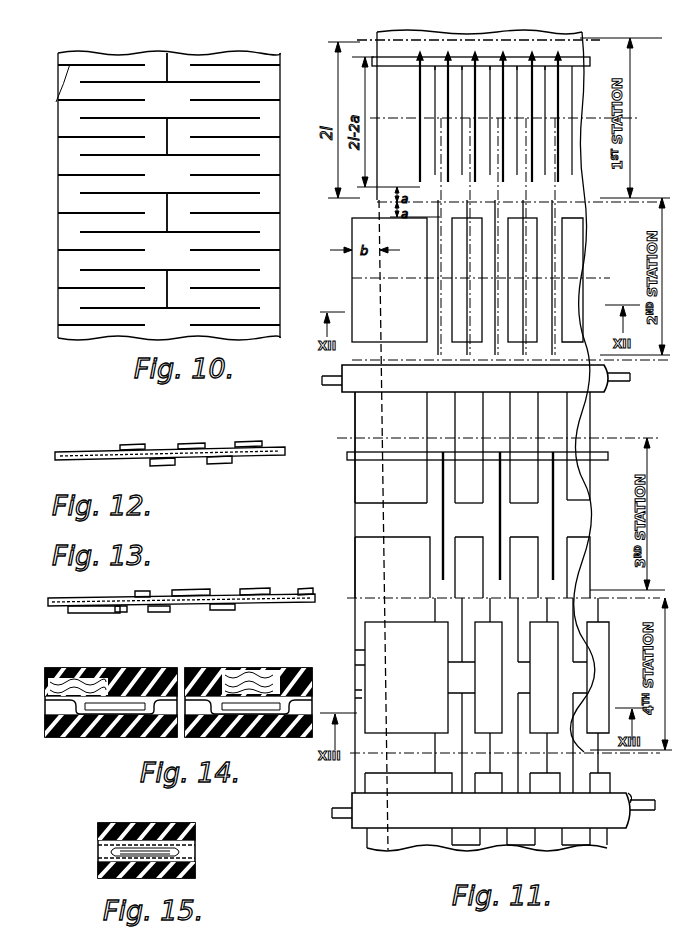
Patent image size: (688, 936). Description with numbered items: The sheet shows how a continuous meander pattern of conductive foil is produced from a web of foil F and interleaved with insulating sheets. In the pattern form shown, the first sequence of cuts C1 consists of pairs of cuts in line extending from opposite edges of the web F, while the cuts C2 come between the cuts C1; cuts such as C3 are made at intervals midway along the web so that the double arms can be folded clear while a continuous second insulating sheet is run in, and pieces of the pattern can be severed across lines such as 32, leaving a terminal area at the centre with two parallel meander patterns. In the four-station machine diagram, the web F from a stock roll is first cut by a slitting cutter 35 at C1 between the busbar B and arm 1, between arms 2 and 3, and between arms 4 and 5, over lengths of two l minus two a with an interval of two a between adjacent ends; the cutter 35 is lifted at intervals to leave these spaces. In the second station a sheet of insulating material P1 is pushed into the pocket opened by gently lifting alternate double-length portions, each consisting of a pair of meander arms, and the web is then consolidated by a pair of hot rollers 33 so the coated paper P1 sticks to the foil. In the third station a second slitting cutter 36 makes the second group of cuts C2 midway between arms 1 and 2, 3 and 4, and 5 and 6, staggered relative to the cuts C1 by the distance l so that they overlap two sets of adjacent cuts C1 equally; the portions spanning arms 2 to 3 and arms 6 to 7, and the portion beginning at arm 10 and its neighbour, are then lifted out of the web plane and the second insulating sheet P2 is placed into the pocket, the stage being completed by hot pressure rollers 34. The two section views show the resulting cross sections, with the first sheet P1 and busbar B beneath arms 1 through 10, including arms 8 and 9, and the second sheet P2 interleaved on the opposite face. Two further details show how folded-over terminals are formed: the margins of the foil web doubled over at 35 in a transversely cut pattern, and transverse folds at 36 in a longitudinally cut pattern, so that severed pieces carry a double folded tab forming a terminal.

In FIG. 10, the foil web F is at (278, 60).
In FIG. 11, the foil web F is at (404, 34).
In FIG. 11, the busbar B is at (380, 43).
In FIG. 12, the busbar B is at (86, 460).
In FIG. 13, the busbar B is at (96, 612).
In FIG. 10, the first sequence of cuts C1 is at (66, 136).
In FIG. 11, the first sequence of cuts C1 is at (471, 163).
In FIG. 12, the first sequence of cuts C1 is at (125, 468).
In FIG. 10, the second group of cuts C2 is at (250, 82).
In FIG. 11, the second group of cuts C2 is at (502, 530).
In FIG. 10, the severing cuts C3 is at (172, 213).
In FIG. 11, the first insulating sheet P1 is at (352, 297).
In FIG. 12, the first insulating sheet P1 is at (72, 452).
In FIG. 13, the first insulating sheet P1 is at (70, 612).
In FIG. 11, the second insulating sheet P2 is at (365, 653).
In FIG. 13, the second insulating sheet P2 is at (70, 598).
In FIG. 10, the severing lines 32 is at (50, 175).
In FIG. 11, the hot rollers 33 is at (600, 391).
In FIG. 11, the hot pressure rollers 34 is at (611, 828).
In FIG. 11, the slitting cutter 35 is at (583, 61).
In FIG. 14, the slitting cutter 35 is at (112, 670).
In FIG. 11, the second slitting cutter 36 is at (604, 452).
In FIG. 15, the second slitting cutter 36 is at (153, 823).
In FIG. 11, the meander arm 1 is at (425, 78).
In FIG. 11, the meander arm 2 is at (440, 78).
In FIG. 11, the meander arm 3 is at (453, 78).
In FIG. 11, the meander arm 4 is at (467, 78).
In FIG. 11, the meander arm 5 is at (480, 78).
In FIG. 11, the meander arm 6 is at (495, 78).
In FIG. 11, the meander arm 7 is at (509, 78).
In FIG. 11, the meander arm 8 is at (522, 78).
In FIG. 11, the meander arm 9 is at (536, 78).
In FIG. 11, the meander arm 10 is at (553, 78).